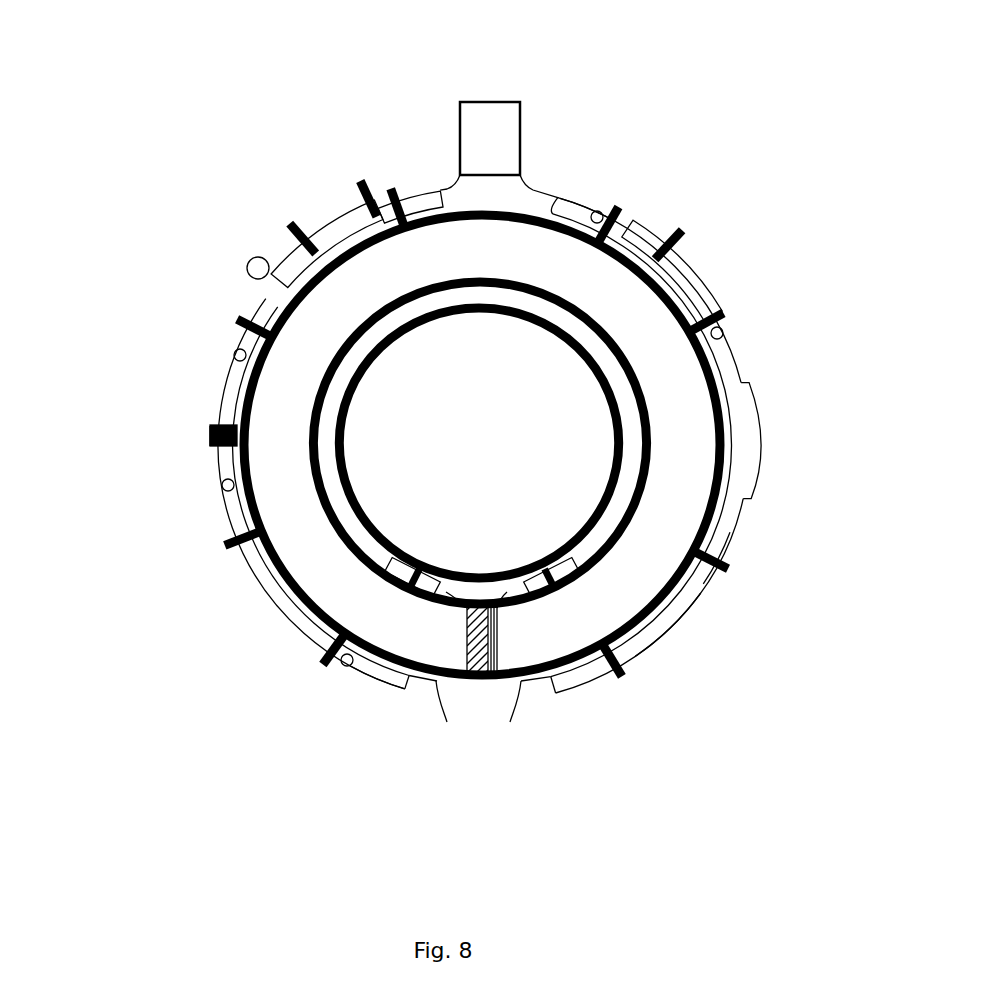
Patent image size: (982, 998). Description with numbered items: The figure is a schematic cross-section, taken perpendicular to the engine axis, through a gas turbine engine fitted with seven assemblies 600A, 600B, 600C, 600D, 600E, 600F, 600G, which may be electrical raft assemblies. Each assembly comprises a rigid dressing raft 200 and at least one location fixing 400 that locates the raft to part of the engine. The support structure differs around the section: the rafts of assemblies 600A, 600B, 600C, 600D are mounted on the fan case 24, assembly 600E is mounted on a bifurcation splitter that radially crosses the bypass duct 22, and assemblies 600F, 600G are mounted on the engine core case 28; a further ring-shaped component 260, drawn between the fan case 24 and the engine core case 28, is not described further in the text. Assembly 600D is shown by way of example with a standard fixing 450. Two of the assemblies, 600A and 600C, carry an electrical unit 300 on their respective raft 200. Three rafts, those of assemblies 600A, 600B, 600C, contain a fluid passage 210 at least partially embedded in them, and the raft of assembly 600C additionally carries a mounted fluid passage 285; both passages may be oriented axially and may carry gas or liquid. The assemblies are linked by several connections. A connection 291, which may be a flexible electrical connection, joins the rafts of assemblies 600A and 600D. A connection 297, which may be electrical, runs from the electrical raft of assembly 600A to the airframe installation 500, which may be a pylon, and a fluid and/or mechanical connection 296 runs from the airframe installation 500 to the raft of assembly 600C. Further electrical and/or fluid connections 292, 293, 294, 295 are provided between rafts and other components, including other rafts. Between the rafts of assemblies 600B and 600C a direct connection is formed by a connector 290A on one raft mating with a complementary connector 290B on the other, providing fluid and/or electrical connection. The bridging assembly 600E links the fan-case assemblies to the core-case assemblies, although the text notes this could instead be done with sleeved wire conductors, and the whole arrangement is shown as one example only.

The bypass duct 22 is at (331, 302).
The fan case 24 is at (218, 434).
The engine core case 28 is at (612, 497).
The rigid dressing raft 200 is at (232, 372).
The fluid passage 210 is at (236, 352).
The intermediate ring 260 is at (393, 582).
The fluid passage 285 is at (248, 264).
The connection 291 is at (768, 450).
The connection 292 is at (515, 690).
The connection 293 is at (440, 690).
The connection 294 is at (457, 600).
The connection 295 is at (500, 600).
The connection 296 is at (452, 185).
The connection 297 is at (530, 192).
The electrical unit 300 is at (340, 213).
The location fixing 400 is at (247, 325).
The standard fixing 450 is at (718, 575).
The airframe installation 500 is at (487, 120).
The assembly 600A is at (598, 205).
The assembly 600B is at (350, 680).
The assembly 600C is at (399, 185).
The assembly 600D is at (690, 636).
The assembly 600E is at (500, 620).
The assembly 600F is at (553, 552).
The assembly 600G is at (413, 560).
The connector 290A is at (213, 439).
The complimentary connector 290B is at (223, 482).